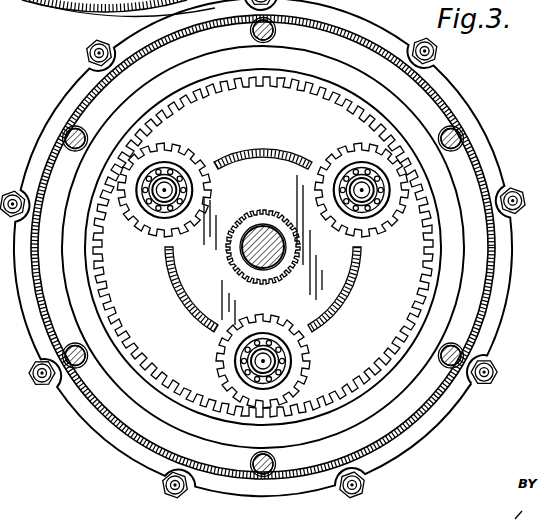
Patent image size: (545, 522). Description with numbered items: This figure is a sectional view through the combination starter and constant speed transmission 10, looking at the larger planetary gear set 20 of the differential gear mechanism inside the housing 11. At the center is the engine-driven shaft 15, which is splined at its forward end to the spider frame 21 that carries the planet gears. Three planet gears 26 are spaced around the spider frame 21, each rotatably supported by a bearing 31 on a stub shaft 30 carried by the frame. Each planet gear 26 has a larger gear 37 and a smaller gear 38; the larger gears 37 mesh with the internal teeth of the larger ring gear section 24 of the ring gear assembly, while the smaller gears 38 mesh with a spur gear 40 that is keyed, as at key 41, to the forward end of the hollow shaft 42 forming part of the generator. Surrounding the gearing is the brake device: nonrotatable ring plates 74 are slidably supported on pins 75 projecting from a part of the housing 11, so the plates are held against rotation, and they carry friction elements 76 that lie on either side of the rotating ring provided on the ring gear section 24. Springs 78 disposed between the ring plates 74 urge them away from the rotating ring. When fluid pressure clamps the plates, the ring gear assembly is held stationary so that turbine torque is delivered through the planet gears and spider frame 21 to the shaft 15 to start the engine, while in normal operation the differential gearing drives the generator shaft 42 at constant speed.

The combination starter and constant speed transmission 10 is at (504, 137).
The housing 11 is at (464, 128).
The shaft 15 is at (260, 230).
The set of planetary gears 20 is at (405, 280).
The spider frame 21 is at (268, 148).
The ring gear section 24 is at (322, 106).
The planet gears 26 is at (147, 218).
The stub shafts 30 is at (372, 188).
The bearings 31 is at (385, 190).
The larger gears 37 is at (177, 140).
The smaller gears 38 is at (187, 163).
The spur gear 40 is at (335, 291).
The key 41 is at (238, 227).
The hollow shaft 42 is at (288, 263).
The ring plates 74 is at (372, 50).
The pins 75 is at (252, 29).
The friction elements 76 is at (312, 434).
The springs 78 is at (276, 26).